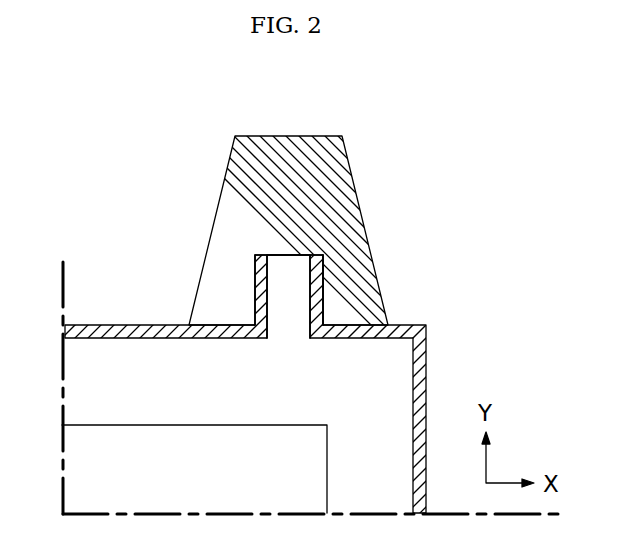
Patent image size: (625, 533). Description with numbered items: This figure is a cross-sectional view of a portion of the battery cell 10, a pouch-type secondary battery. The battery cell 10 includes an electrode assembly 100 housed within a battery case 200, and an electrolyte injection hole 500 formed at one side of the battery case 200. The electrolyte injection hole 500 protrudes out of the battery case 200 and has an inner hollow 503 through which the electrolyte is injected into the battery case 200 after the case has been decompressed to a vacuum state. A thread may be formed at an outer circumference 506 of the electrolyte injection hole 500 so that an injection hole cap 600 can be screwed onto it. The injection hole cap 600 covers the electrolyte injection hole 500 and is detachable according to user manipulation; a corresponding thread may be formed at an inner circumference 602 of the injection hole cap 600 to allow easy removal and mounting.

The battery cell 10 is at (110, 141).
The electrode assembly 100 is at (64, 467).
The battery case 200 is at (62, 331).
The electrolyte injection hole 500 is at (317, 300).
The inner hollow 503 is at (298, 277).
The outer circumference 506 is at (323, 278).
The injection hole cap 600 is at (418, 149).
The inner circumference 602 is at (256, 292).